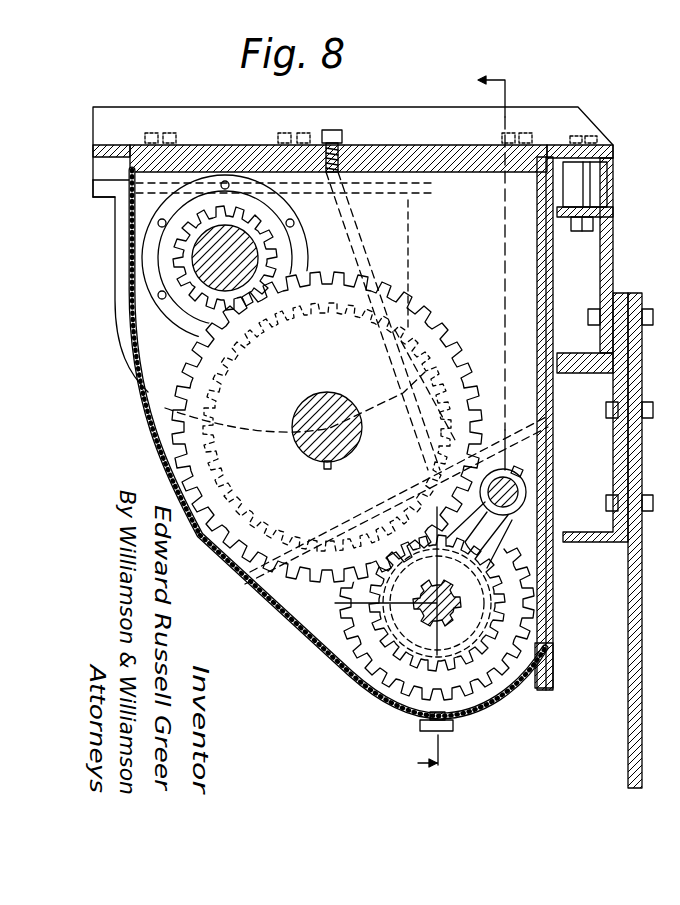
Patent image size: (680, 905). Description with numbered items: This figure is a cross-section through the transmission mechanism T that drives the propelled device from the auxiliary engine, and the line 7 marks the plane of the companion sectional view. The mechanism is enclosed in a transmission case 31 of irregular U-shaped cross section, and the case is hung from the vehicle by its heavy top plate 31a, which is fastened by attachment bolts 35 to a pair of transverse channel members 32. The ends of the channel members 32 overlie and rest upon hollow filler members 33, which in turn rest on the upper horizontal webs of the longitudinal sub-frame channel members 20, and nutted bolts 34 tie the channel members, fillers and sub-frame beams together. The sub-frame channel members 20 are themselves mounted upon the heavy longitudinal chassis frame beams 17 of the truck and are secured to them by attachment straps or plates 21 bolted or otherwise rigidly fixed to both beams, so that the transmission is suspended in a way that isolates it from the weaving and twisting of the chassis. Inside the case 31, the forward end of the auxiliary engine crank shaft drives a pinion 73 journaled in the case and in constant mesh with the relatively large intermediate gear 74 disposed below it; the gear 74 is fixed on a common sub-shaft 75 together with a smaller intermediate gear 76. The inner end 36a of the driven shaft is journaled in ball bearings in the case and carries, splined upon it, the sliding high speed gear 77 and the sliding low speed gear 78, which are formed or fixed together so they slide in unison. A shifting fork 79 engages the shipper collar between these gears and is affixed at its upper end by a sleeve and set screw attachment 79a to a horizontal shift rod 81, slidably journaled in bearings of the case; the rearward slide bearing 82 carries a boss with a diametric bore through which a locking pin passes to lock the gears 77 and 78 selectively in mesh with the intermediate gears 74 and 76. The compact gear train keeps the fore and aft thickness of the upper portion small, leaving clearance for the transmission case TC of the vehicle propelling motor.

The section line 7- 7 is at (451, 422).
The chassis frame beam 17 is at (626, 436).
The sub-frame channel member 20 is at (614, 253).
The attachment strap or plate 21 is at (637, 679).
The transmission case 31 is at (160, 447).
The top plate 31a is at (468, 172).
The channel member 32 is at (392, 110).
The hollow filler member 33 is at (614, 168).
The nutted bolt 34 is at (586, 187).
The attachment bolt 35 is at (278, 132).
The inner end of driven shaft 36a is at (346, 600).
The pinion 73 is at (272, 258).
The intermediate gear 74 is at (447, 340).
The sub-shaft 75 is at (333, 400).
The smaller intermediate gear 76 is at (452, 357).
The sliding high speed gear 77 is at (390, 657).
The sliding low speed gear 78 is at (493, 678).
The shifting fork 79 is at (496, 522).
The sleeve and set screw attachment 79a is at (524, 471).
The shift rod 81 is at (512, 493).
The slide bearing 82 is at (518, 500).
The transmission mechanism T is at (292, 650).
The transmission case of the vehicle propelling motor TC is at (136, 367).